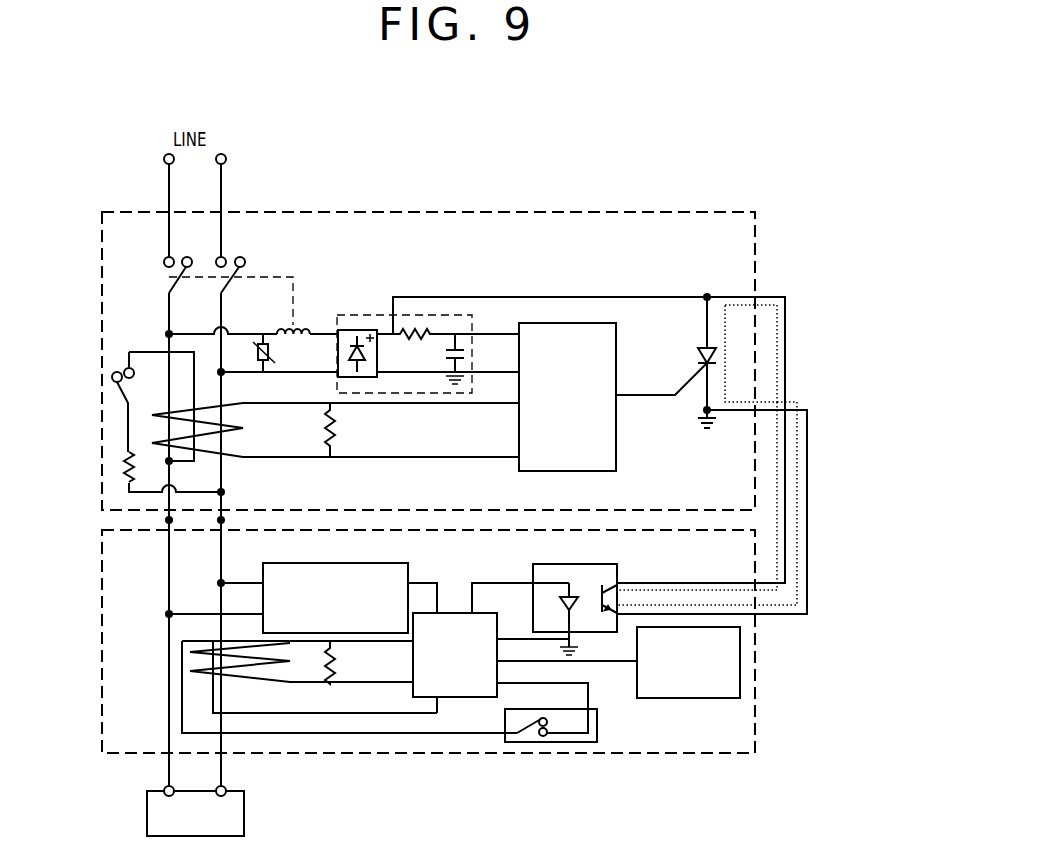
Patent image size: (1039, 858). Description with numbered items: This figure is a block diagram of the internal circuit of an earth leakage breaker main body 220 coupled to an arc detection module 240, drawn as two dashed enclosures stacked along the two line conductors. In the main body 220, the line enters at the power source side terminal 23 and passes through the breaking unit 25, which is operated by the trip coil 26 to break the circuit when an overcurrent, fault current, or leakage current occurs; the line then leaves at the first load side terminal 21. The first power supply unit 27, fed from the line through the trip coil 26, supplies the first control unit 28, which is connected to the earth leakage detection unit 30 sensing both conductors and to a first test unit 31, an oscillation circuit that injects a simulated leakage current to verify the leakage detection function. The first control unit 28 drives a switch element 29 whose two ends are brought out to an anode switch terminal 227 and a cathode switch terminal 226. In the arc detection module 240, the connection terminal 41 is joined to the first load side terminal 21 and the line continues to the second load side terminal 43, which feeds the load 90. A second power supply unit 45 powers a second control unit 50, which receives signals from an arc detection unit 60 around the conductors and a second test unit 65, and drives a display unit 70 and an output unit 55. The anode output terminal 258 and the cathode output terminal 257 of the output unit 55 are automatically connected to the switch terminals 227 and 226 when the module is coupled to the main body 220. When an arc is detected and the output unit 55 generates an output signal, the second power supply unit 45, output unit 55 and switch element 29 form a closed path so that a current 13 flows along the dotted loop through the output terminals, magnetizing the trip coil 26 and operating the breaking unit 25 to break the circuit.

The power source side terminal 23 is at (169, 186).
The breaking unit 25 is at (178, 281).
The trip coil 26 is at (308, 322).
The first power supply unit 27 is at (350, 315).
The first control unit 28 is at (568, 323).
The switch element 29 is at (698, 348).
The anode switch terminal 227 is at (707, 293).
The cathode switch terminal 226 is at (705, 413).
The anode output terminal 258 is at (835, 331).
The cathode output terminal 257 is at (855, 463).
The current 13 is at (797, 522).
The earth leakage breaker main body 220 is at (102, 336).
The first test unit 31 is at (120, 390).
The earth leakage detection unit 30 is at (256, 470).
The first load side terminal 21 is at (169, 503).
The connection terminal 41 is at (169, 538).
The second power supply unit 45 is at (263, 563).
The output unit 55 is at (533, 575).
The arc detection module 240 is at (102, 611).
The arc detection unit 60 is at (240, 678).
The display unit 70 is at (783, 662).
The second control unit 50 is at (458, 775).
The second test unit 65 is at (548, 775).
The second load side terminal 43 is at (169, 771).
The load 90 is at (290, 814).